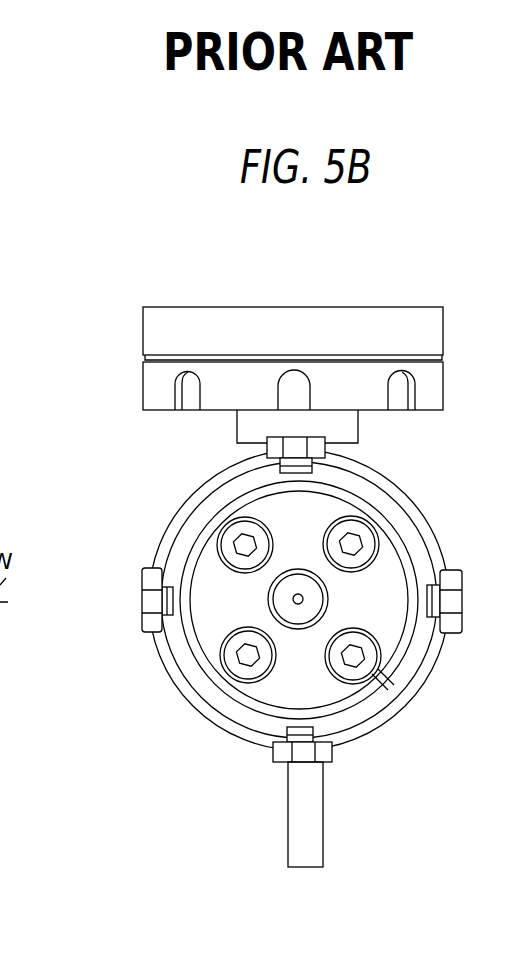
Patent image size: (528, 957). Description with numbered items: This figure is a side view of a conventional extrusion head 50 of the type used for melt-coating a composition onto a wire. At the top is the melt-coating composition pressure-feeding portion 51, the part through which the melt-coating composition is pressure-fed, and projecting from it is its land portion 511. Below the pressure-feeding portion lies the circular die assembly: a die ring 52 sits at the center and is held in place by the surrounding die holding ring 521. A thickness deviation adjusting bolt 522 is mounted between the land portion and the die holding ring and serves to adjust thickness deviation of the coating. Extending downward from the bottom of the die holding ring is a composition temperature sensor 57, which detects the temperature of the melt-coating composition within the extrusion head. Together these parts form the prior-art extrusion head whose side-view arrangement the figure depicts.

The extrusion head 50 is at (424, 289).
The melt-coating composition pressure-feeding portion 51 is at (292, 307).
The land portion 511 is at (237, 431).
The die ring 52 is at (282, 598).
The die holding ring 521 is at (390, 630).
The thickness deviation adjusting bolt 522 is at (318, 444).
The composition temperature sensor 57 is at (293, 822).